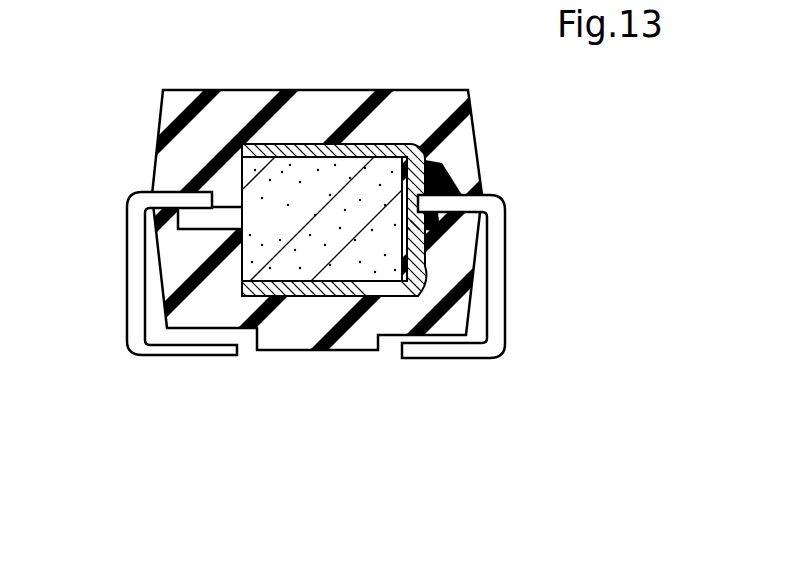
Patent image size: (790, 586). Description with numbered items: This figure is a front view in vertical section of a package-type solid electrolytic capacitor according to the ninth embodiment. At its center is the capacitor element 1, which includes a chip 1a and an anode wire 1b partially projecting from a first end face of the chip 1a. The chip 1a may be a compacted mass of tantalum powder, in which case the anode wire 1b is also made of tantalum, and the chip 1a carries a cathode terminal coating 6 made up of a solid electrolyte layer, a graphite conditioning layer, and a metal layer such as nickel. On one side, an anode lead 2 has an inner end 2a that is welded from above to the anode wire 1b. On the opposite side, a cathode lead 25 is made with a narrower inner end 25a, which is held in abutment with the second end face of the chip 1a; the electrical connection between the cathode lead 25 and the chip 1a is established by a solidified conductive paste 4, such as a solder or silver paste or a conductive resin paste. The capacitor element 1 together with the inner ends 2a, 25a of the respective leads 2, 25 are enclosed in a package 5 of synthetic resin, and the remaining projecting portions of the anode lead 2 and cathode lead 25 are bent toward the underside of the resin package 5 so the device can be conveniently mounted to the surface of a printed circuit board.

The capacitor element 1 is at (330, 188).
The chip 1a is at (315, 182).
The anode wire 1b is at (223, 214).
The anode lead 2 is at (127, 211).
The inner end of anode lead 2a is at (180, 193).
The conductive paste 4 is at (447, 193).
The package 5 is at (473, 115).
The cathode terminal coating 6 is at (394, 144).
The cathode lead 25 is at (506, 211).
The inner end of cathode lead 25a is at (470, 196).